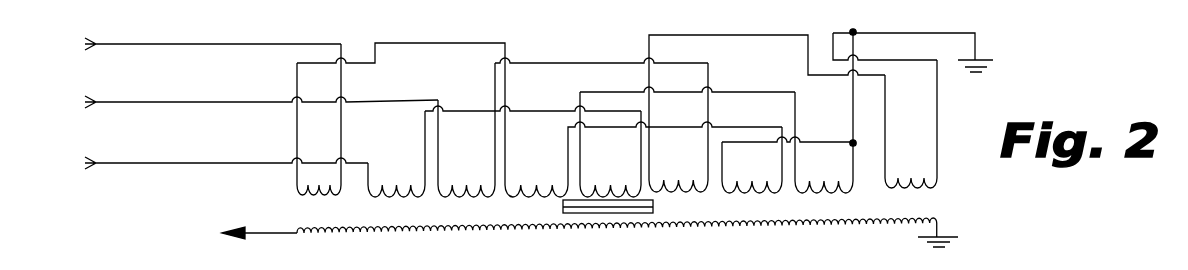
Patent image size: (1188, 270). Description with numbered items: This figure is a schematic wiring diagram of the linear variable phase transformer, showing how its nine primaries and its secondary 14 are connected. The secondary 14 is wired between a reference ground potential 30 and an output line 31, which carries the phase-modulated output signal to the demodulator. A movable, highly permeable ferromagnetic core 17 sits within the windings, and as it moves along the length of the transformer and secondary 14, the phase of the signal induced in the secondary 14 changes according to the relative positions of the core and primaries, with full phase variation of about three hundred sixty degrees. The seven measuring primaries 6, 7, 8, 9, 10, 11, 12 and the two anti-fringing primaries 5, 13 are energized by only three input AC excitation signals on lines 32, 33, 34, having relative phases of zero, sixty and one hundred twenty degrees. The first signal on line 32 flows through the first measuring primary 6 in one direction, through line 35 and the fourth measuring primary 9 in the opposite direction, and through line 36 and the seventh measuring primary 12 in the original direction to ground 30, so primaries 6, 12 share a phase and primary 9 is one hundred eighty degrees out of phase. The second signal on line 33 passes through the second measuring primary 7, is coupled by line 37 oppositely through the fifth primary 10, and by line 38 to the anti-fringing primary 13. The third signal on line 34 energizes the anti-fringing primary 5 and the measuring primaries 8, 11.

The anti-fringing primary 5 is at (297, 200).
The first measuring primary 6 is at (397, 198).
The second measuring primary 7 is at (462, 198).
The measuring primary 8 is at (514, 198).
The fourth measuring primary 9 is at (623, 193).
The fifth primary 10 is at (689, 192).
The measuring primary 11 is at (770, 192).
The seventh measuring primary 12 is at (845, 192).
The anti-fringing primary 13 is at (920, 188).
The secondary 14 is at (393, 234).
The ferromagnetic core 17 is at (563, 207).
The reference ground potential 30 is at (989, 69).
The output line 31 is at (267, 234).
The line 32 is at (157, 166).
The line 33 is at (192, 104).
The line 34 is at (192, 46).
The line 35 is at (425, 129).
The line 36 is at (727, 90).
The line 37 is at (560, 63).
The line 38 is at (712, 33).